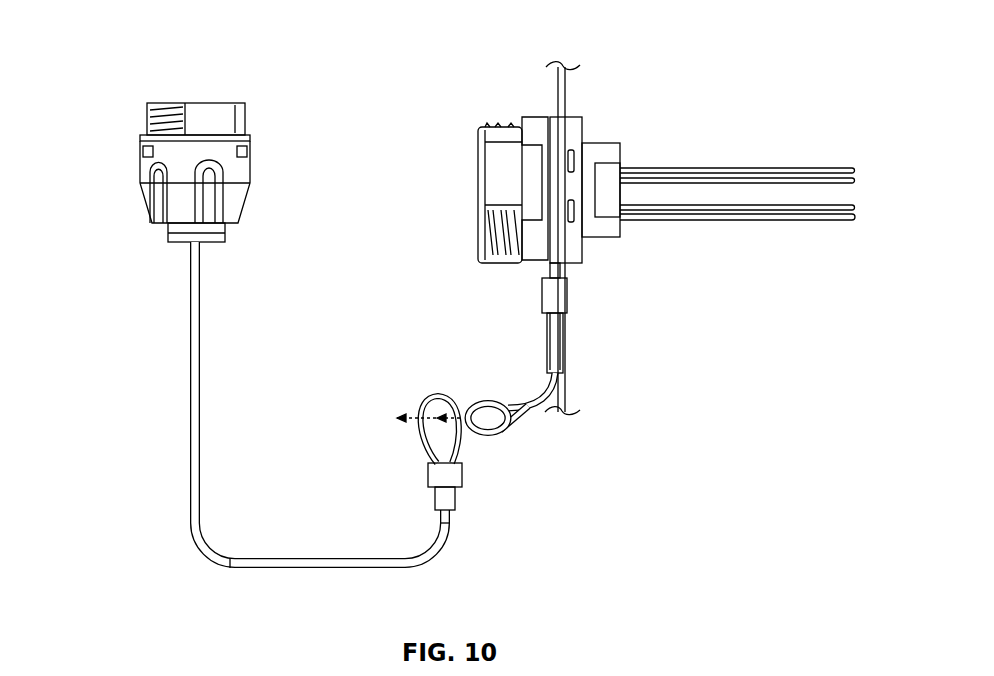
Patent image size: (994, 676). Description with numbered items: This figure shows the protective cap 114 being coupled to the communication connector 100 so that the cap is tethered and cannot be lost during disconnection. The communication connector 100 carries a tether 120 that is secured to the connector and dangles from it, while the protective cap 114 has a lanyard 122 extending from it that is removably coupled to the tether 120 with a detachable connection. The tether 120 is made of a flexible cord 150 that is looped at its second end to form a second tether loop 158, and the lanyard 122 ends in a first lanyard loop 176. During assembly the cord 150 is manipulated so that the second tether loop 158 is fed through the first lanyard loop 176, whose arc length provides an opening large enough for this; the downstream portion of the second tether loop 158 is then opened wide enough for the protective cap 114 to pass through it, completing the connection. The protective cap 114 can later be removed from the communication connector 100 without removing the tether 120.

The communication connector 100 is at (605, 99).
The protective cap 114 is at (260, 139).
The tether 120 is at (513, 420).
The lanyard 122 is at (190, 395).
The cord 150 is at (490, 400).
The second tether loop 158 is at (477, 434).
The first lanyard loop 176 is at (425, 393).